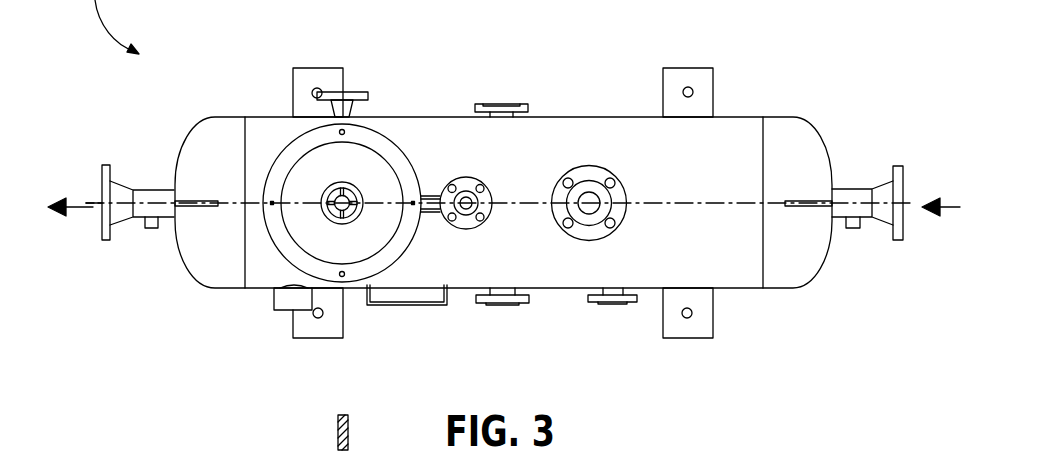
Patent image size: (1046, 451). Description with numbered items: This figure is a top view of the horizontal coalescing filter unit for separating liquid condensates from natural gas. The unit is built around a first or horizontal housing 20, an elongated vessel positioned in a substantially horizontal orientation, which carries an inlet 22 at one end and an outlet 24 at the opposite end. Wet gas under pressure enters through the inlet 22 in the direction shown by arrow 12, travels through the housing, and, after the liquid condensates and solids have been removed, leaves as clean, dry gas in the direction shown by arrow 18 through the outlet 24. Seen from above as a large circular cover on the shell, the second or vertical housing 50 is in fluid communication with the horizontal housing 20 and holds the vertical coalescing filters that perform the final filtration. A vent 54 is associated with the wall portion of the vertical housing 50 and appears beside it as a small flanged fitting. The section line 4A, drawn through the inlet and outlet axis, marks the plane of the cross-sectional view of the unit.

The arrow indicating gas under pressure 12 is at (952, 212).
The arrow indicating clean dry gas 18 is at (72, 203).
The horizontal housing 20 is at (590, 128).
The inlet 22 is at (893, 173).
The outlet 24 is at (113, 175).
The vertical housing 50 is at (395, 140).
The vent 54 is at (488, 205).
The section line 4A is at (86, 203).